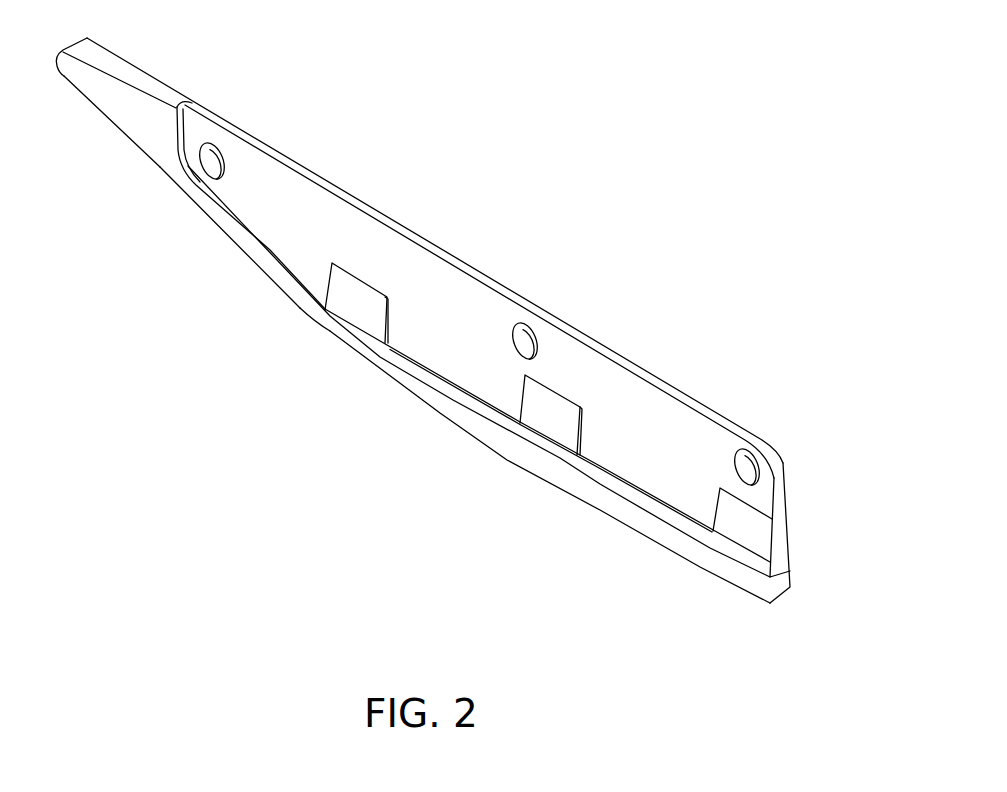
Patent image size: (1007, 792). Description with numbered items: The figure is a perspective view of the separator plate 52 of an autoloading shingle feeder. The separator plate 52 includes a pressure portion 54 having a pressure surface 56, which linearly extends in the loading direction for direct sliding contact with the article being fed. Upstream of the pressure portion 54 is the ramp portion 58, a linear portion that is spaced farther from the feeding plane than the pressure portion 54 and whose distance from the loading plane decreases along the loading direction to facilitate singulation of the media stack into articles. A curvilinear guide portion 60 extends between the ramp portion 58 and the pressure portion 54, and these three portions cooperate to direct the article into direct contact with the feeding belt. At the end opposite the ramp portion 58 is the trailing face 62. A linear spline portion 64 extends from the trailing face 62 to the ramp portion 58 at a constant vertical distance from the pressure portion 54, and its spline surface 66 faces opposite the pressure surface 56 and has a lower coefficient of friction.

The separator plate 52 is at (619, 50).
The pressure portion 54 is at (535, 520).
The pressure surface 56 is at (601, 558).
The ramp portion 58 is at (121, 178).
The guide portion 60 is at (309, 372).
The trailing face 62 is at (782, 556).
The spline portion 64 is at (571, 248).
The spline surface 66 is at (580, 323).